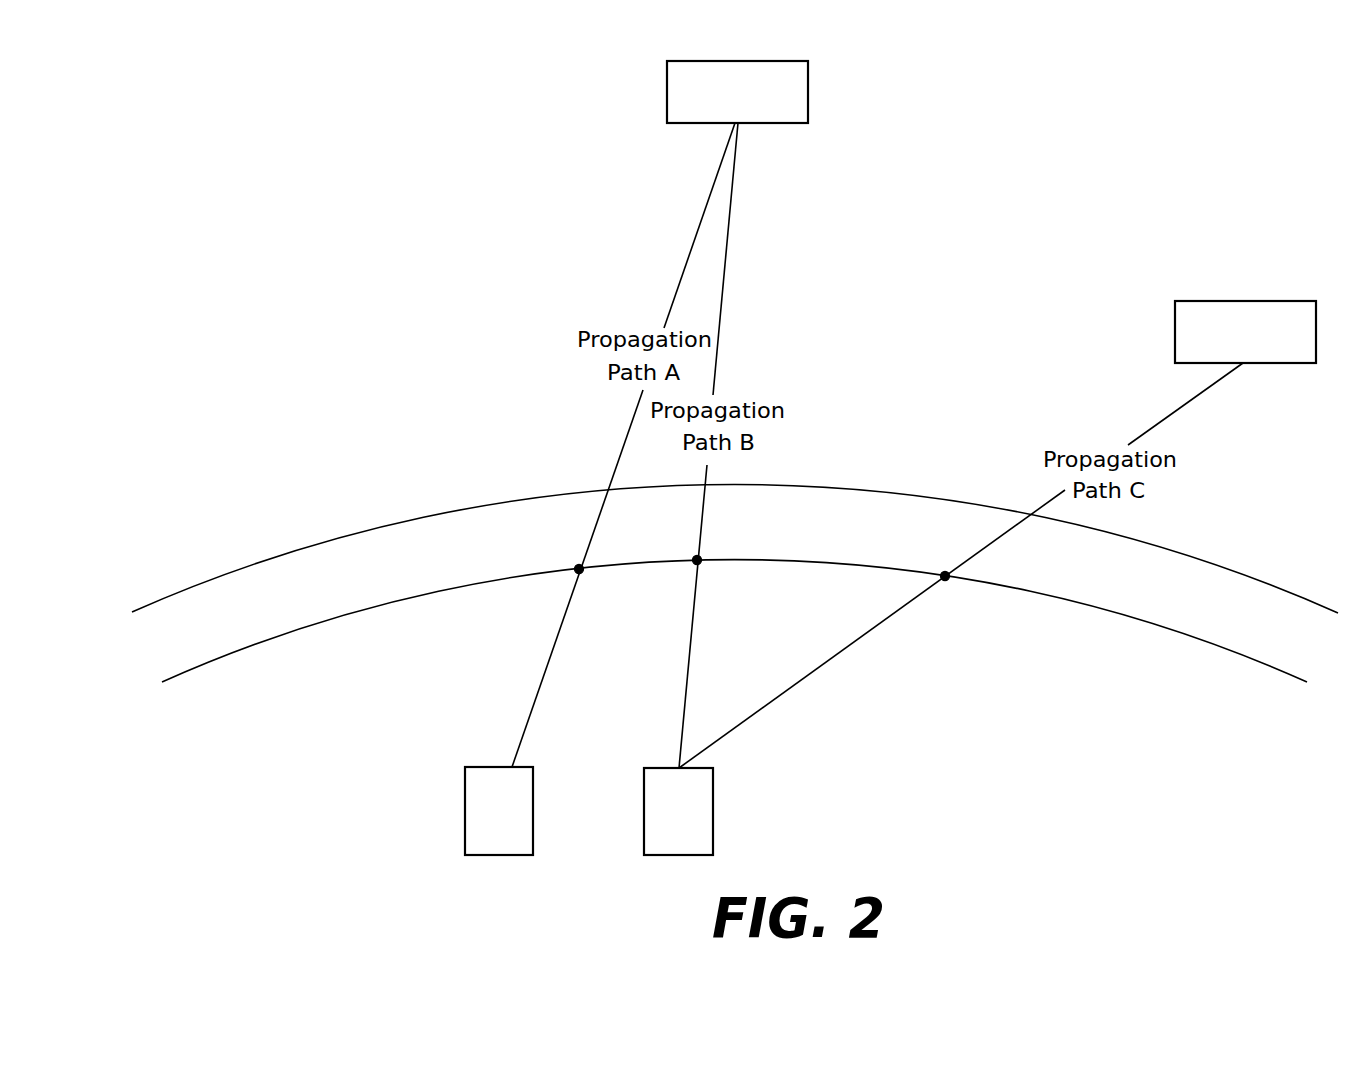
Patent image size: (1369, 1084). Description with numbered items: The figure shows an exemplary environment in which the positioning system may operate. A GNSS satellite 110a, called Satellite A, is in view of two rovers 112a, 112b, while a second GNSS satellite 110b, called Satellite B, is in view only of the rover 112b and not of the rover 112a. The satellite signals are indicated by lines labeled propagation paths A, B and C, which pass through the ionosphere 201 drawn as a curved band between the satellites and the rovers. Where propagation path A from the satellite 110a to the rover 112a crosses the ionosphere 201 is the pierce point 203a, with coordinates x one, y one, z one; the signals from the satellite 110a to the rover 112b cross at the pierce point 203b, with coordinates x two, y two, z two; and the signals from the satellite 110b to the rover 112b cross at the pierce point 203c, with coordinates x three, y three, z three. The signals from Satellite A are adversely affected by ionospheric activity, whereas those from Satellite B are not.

The GNSS satellite 110a is at (667, 90).
The GNSS satellite 110b is at (1175, 332).
The ionosphere 201 is at (1160, 548).
The pierce point 203a is at (579, 569).
The pierce point 203b is at (697, 560).
The pierce point 203c is at (945, 576).
The rover 112a is at (465, 783).
The rover 112b is at (713, 817).